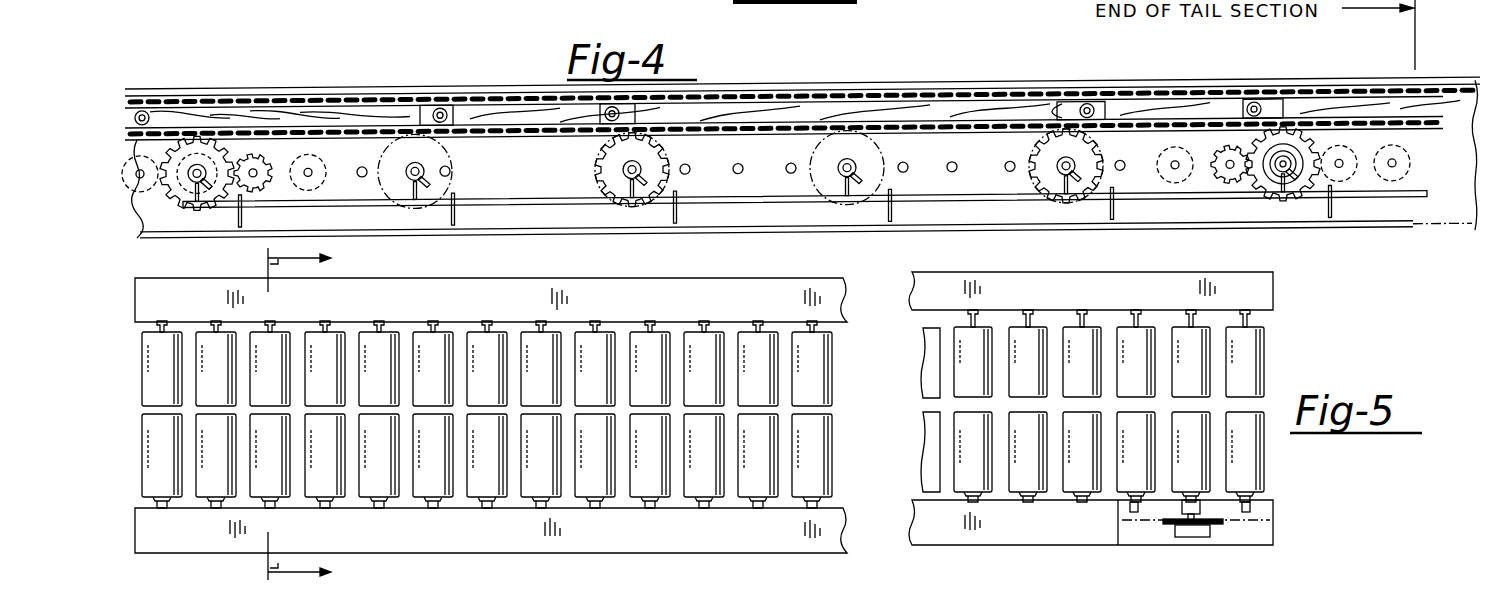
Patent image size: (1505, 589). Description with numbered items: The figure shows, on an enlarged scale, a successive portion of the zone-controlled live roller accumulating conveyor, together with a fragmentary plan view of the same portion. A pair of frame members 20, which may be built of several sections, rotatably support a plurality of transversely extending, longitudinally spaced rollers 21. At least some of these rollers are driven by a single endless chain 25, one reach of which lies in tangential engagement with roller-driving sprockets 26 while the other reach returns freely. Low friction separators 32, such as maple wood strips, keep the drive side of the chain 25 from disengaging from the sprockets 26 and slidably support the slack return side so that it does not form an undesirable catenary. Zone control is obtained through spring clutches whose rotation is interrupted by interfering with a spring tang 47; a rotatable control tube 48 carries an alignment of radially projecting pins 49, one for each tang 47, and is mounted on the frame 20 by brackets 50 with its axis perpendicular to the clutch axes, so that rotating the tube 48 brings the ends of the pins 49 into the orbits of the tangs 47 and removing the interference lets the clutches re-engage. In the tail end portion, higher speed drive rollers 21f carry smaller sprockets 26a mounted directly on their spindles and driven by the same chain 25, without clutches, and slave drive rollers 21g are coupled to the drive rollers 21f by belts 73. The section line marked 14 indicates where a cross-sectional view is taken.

In FIG. 4, the section line 14- 14 is at (322, 416).
In FIG. 4, the frame member 20 is at (1016, 70).
In FIG. 4, the roller 21 is at (436, 352).
In FIG. 5, the drive roller 21f is at (1195, 350).
In FIG. 5, the slave drive roller 21g is at (975, 335).
In FIG. 4, the endless chain 25 is at (1337, 131).
In FIG. 5, the endless chain 25 is at (1295, 505).
In FIG. 4, the sprocket 26 is at (598, 142).
In FIG. 5, the smaller sprocket 26a is at (1165, 522).
In FIG. 4, the low friction separator 32 is at (392, 117).
In FIG. 4, the spring tang 47 is at (232, 182).
In FIG. 4, the control tube 48 is at (773, 202).
In FIG. 4, the pin 49 is at (628, 196).
In FIG. 4, the bracket 50 is at (457, 219).
In FIG. 5, the belt 73 is at (1160, 480).